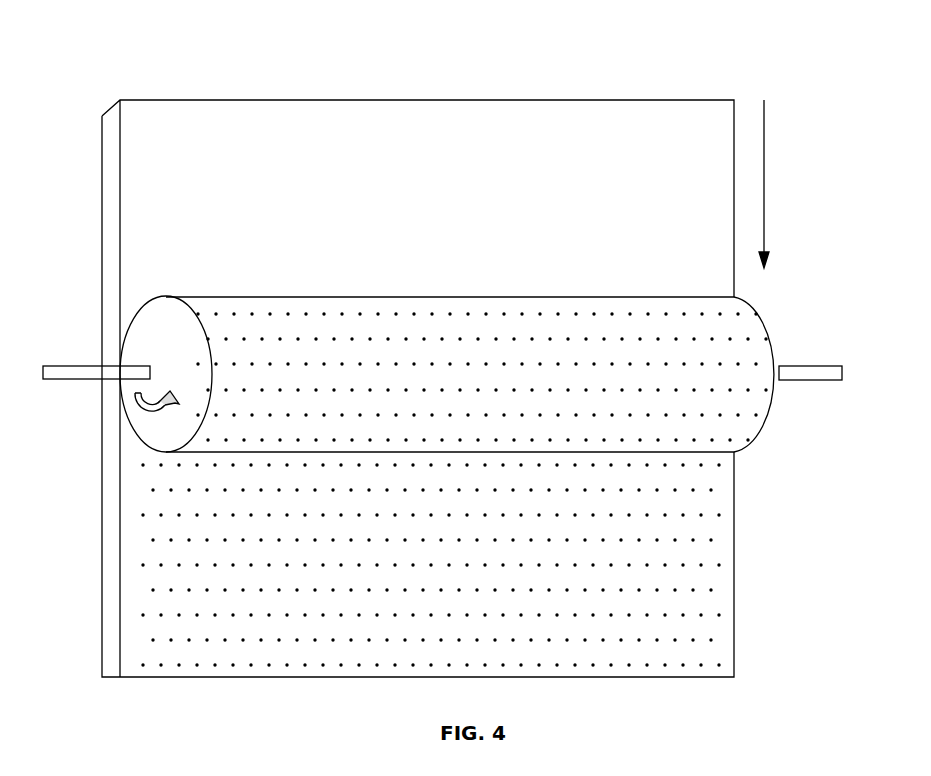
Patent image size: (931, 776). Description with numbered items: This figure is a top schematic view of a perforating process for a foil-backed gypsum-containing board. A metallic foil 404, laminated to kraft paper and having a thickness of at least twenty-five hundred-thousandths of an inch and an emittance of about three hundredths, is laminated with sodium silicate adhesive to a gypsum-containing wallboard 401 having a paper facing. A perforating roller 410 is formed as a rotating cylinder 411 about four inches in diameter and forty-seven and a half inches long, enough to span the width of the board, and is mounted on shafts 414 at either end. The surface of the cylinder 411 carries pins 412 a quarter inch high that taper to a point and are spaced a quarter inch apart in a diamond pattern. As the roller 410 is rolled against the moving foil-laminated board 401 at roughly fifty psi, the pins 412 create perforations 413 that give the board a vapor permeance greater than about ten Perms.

The gypsum-containing wallboard 401 is at (102, 127).
The metallic foil 404 is at (211, 115).
The perforating roller 410 is at (762, 452).
The rotating cylinder 411 is at (157, 371).
The pins 412 is at (700, 313).
The perforations 413 is at (717, 565).
The shafts 414 is at (73, 366).